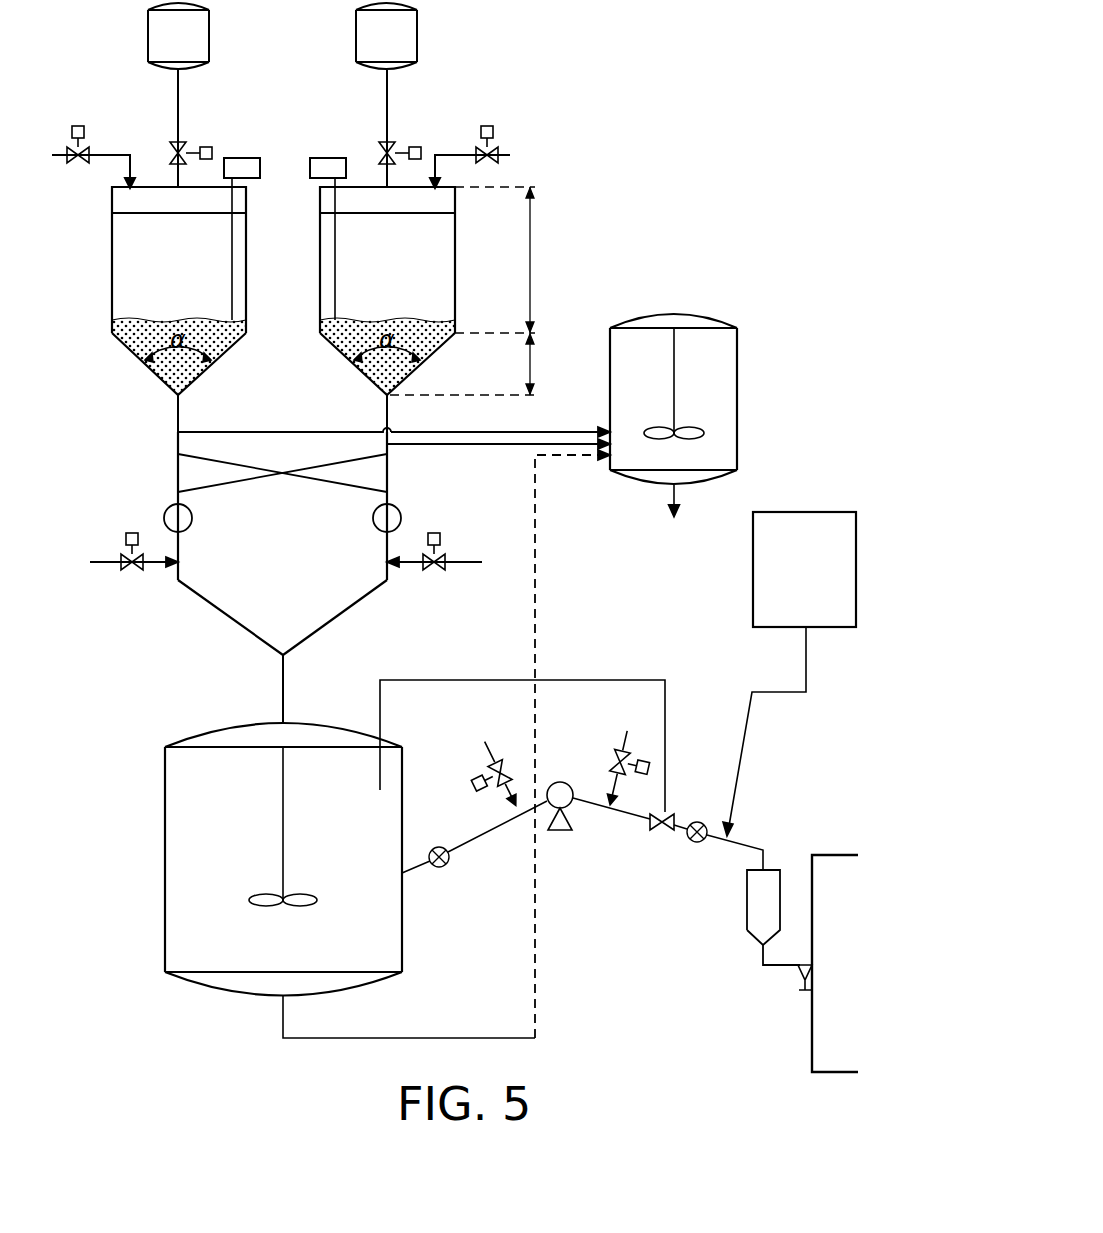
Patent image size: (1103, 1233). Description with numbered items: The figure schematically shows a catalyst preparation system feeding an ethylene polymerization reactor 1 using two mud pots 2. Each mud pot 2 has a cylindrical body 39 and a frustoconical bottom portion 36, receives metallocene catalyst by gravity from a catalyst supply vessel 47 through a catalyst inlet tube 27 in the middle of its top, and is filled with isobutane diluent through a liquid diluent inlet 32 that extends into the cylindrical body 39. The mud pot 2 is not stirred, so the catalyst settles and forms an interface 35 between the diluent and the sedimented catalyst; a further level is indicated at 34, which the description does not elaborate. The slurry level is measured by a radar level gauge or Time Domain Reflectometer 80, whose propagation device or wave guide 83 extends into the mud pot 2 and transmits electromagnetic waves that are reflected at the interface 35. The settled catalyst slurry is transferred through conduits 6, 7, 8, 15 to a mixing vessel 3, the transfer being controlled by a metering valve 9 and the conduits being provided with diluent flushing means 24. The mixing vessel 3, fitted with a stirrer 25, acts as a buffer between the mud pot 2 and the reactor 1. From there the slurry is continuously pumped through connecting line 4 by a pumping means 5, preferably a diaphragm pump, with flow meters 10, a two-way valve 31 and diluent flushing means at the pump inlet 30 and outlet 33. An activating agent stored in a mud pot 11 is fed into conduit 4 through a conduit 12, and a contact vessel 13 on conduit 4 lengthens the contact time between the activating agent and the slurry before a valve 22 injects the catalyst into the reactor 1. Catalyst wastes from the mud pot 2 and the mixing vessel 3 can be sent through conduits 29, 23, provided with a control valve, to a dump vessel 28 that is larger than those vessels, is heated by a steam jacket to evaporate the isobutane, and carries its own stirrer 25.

The polymerization reactor 1 is at (848, 953).
The mud pot 2 is at (186, 255).
The mixing vessel 3 is at (221, 823).
The conduit 4 is at (405, 872).
The pumping means 5 is at (557, 832).
The conduit 6 is at (235, 625).
The conduit 7 is at (330, 625).
The conduit 8 is at (232, 482).
The metering valve 9 is at (192, 518).
The flow meter 10 is at (432, 851).
The mud pot for activating agent 11 is at (822, 566).
The conduit 12 is at (742, 768).
The contact vessel 13 is at (745, 900).
The conduit 15 is at (285, 694).
The valve 22 is at (790, 978).
The conduit 23 is at (537, 535).
The diluent flushing means 24 is at (108, 562).
The stirrer 25 is at (690, 437).
The catalyst inlet tube 27 is at (182, 108).
The dump vessel 28 is at (654, 361).
The conduit 29 is at (477, 433).
The diluent flushing means at pump inlet 30 is at (497, 762).
The two-way valve 31 is at (655, 830).
The liquid diluent inlet 32 is at (115, 153).
The diluent flushing means at pump outlet 33 is at (625, 740).
The upper level 34 is at (100, 217).
The interface between diluent and catalyst 35 is at (100, 325).
The frustoconical bottom portion 36 is at (477, 364).
The cylindrical body 39 is at (510, 260).
The catalyst supply vessel 47 is at (205, 37).
The radar level gauge system 80 is at (310, 168).
The propagation device 83 is at (335, 258).